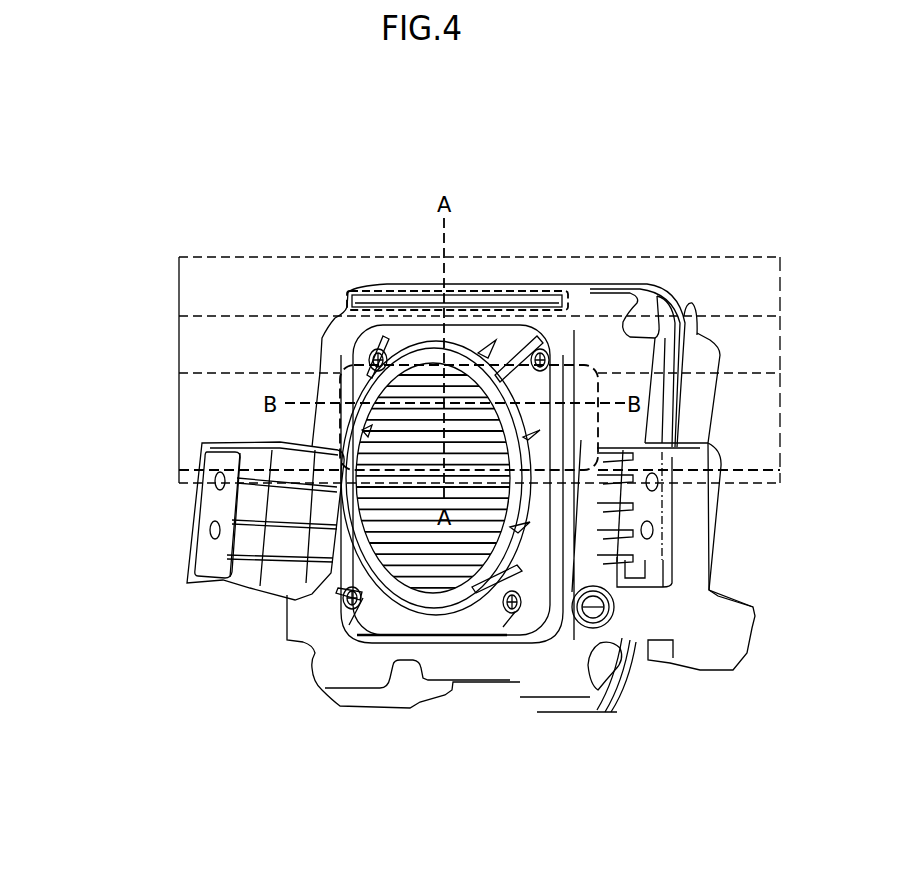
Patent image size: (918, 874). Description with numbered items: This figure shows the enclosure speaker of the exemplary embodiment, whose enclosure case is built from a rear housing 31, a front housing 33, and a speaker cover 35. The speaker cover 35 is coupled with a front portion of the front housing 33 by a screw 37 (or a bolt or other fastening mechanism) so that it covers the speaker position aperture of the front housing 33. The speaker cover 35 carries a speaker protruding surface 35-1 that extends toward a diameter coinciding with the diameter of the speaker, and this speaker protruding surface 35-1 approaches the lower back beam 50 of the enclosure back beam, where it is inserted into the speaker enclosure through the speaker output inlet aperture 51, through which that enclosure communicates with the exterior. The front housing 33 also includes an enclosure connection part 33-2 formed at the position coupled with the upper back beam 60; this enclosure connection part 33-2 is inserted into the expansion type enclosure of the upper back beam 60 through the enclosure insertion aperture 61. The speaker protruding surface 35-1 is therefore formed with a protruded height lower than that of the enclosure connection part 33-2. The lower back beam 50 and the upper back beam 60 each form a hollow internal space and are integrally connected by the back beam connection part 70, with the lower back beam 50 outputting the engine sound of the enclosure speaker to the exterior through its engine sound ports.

The rear housing 31 is at (692, 558).
The front housing 33 is at (562, 640).
The enclosure connection part 33-2 is at (517, 302).
The speaker cover 35 is at (384, 617).
The speaker protruding surface 35-1 is at (390, 540).
The screw 37 is at (513, 610).
The lower back beam 50 is at (200, 408).
The speaker output inlet aperture 51 is at (340, 415).
The upper back beam 60 is at (198, 288).
The enclosure insertion aperture 61 is at (375, 292).
The back beam connection part 70 is at (210, 352).